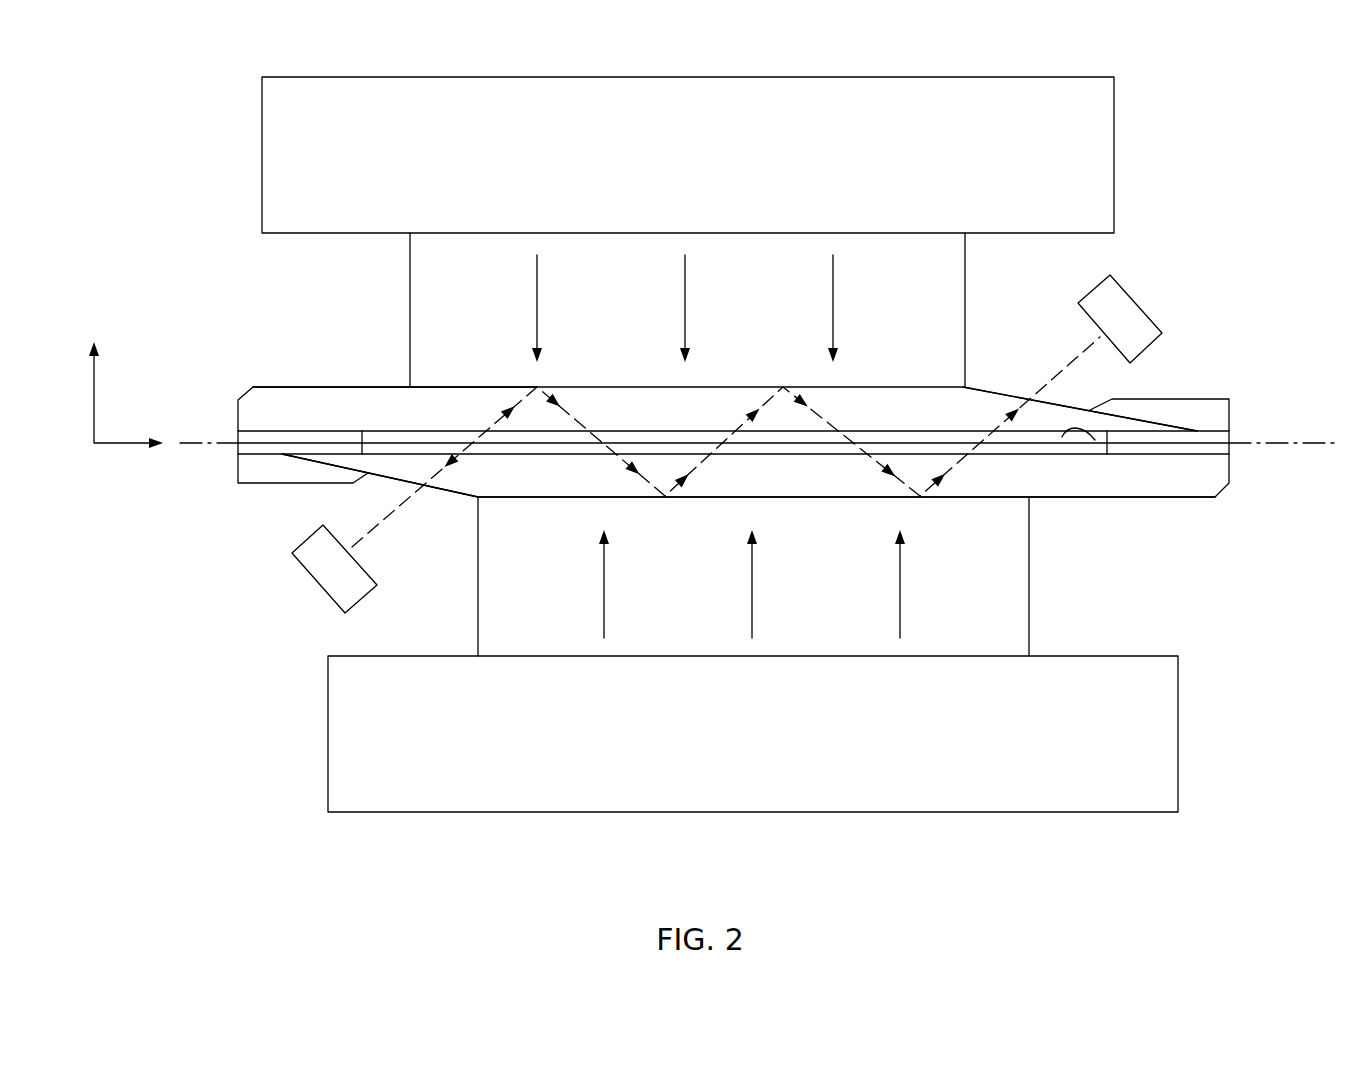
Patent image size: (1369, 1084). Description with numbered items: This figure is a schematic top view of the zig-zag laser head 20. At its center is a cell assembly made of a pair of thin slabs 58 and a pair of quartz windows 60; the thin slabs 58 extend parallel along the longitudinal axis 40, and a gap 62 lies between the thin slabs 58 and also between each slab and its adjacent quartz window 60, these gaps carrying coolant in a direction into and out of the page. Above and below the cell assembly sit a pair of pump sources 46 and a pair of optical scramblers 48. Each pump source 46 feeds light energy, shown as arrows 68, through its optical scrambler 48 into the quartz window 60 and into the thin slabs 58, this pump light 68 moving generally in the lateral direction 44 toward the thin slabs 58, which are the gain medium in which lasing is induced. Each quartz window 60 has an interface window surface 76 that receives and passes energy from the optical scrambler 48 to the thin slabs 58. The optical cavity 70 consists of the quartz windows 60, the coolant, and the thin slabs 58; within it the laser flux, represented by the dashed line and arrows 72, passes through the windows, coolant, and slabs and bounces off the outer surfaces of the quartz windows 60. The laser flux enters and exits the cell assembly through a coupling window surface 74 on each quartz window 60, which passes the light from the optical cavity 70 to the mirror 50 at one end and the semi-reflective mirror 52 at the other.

The zig-zag laser head 20 is at (1226, 384).
The longitudinal axis 40 is at (200, 445).
The lateral direction 44 is at (91, 413).
The pump source 46 is at (1114, 128).
The optical scrambler 48 is at (965, 270).
The mirror 50 is at (315, 582).
The semi-reflective mirror 52 is at (1142, 300).
The thin slab 58 is at (386, 438).
The quartz window 60 is at (403, 468).
The gap 62 is at (1058, 445).
The pump light 68 is at (603, 605).
The optical cavity 70 is at (368, 368).
The laser flux 72 is at (441, 471).
The coupling window surface 74 is at (1070, 405).
The interface window surface 76 is at (967, 497).